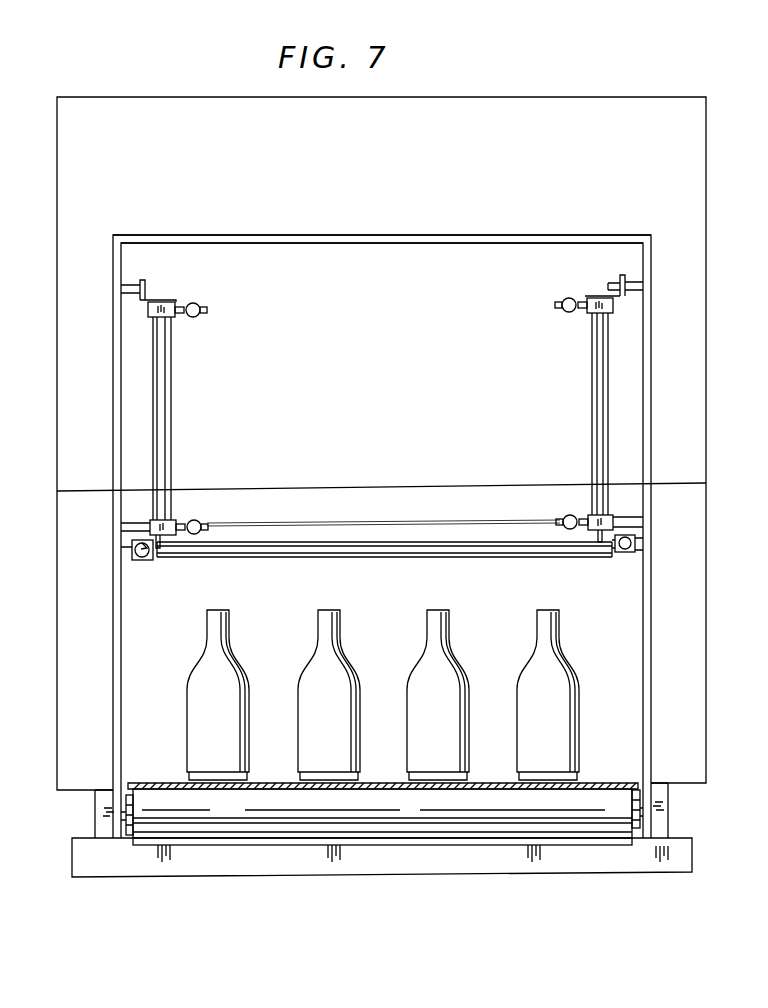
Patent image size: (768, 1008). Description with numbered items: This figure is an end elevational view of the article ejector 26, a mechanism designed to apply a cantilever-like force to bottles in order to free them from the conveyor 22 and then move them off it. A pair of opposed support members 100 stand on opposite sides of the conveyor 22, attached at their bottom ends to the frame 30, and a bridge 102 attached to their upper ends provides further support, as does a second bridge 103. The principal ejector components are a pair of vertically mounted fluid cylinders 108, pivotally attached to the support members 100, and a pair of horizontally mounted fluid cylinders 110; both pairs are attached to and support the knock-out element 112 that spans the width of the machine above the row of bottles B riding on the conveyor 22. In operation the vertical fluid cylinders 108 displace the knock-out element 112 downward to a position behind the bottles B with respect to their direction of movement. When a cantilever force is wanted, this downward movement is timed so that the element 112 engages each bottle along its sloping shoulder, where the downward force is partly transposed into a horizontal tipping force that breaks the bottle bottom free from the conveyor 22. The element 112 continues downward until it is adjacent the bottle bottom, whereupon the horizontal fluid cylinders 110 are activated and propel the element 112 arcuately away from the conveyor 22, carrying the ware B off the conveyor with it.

The article ejector 26 is at (722, 318).
The support members 100 is at (650, 618).
The bridge 102 is at (390, 214).
The fluid cylinders 108 is at (172, 302).
The fluid cylinders 110 is at (141, 562).
The knock-out element 112 is at (436, 546).
The bridge 103 is at (240, 522).
The bottles B is at (406, 686).
The conveyor 22 is at (378, 782).
The frame 30 is at (665, 822).